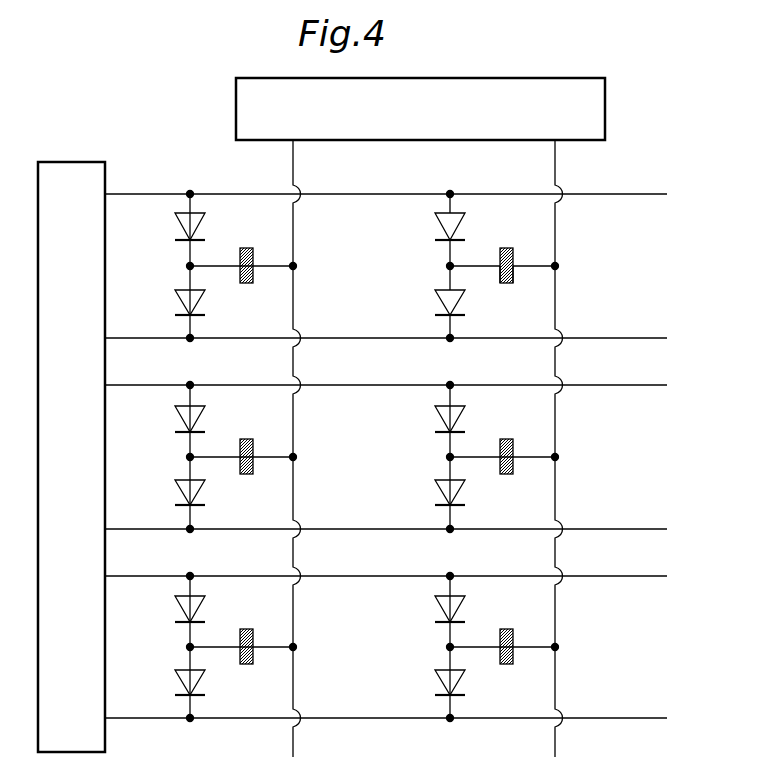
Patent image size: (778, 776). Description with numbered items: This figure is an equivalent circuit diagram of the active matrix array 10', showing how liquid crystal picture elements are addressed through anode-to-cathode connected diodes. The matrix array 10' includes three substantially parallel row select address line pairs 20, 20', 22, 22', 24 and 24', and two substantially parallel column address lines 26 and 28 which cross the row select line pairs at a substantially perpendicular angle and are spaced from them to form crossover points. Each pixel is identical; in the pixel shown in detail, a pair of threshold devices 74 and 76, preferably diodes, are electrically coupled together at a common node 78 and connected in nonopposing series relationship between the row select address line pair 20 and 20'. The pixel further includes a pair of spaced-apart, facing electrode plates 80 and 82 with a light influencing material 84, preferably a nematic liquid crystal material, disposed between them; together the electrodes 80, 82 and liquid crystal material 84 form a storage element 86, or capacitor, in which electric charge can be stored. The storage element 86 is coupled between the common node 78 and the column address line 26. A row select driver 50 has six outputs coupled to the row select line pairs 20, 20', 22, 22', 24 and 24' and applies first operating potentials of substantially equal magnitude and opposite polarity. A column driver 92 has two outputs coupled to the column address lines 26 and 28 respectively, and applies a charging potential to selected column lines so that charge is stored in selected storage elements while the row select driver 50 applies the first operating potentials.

The matrix array 10' is at (418, 440).
The row select driver 50 is at (77, 160).
The column driver 92 is at (609, 104).
The row select address line 20 is at (396, 212).
The row select address line 20' is at (399, 327).
The row select address line 22 is at (398, 402).
The row select address line 22' is at (399, 512).
The row select address line 24 is at (396, 593).
The row select address line 24' is at (399, 700).
The column address line 26 is at (293, 241).
The column address line 28 is at (555, 240).
The storage element 86 is at (509, 250).
The threshold device 74 is at (437, 220).
The threshold device 76 is at (436, 300).
The common node 78 is at (447, 266).
The electrode plate 80 is at (500, 280).
The electrode plate 82 is at (514, 280).
The light influencing material 84 is at (503, 248).